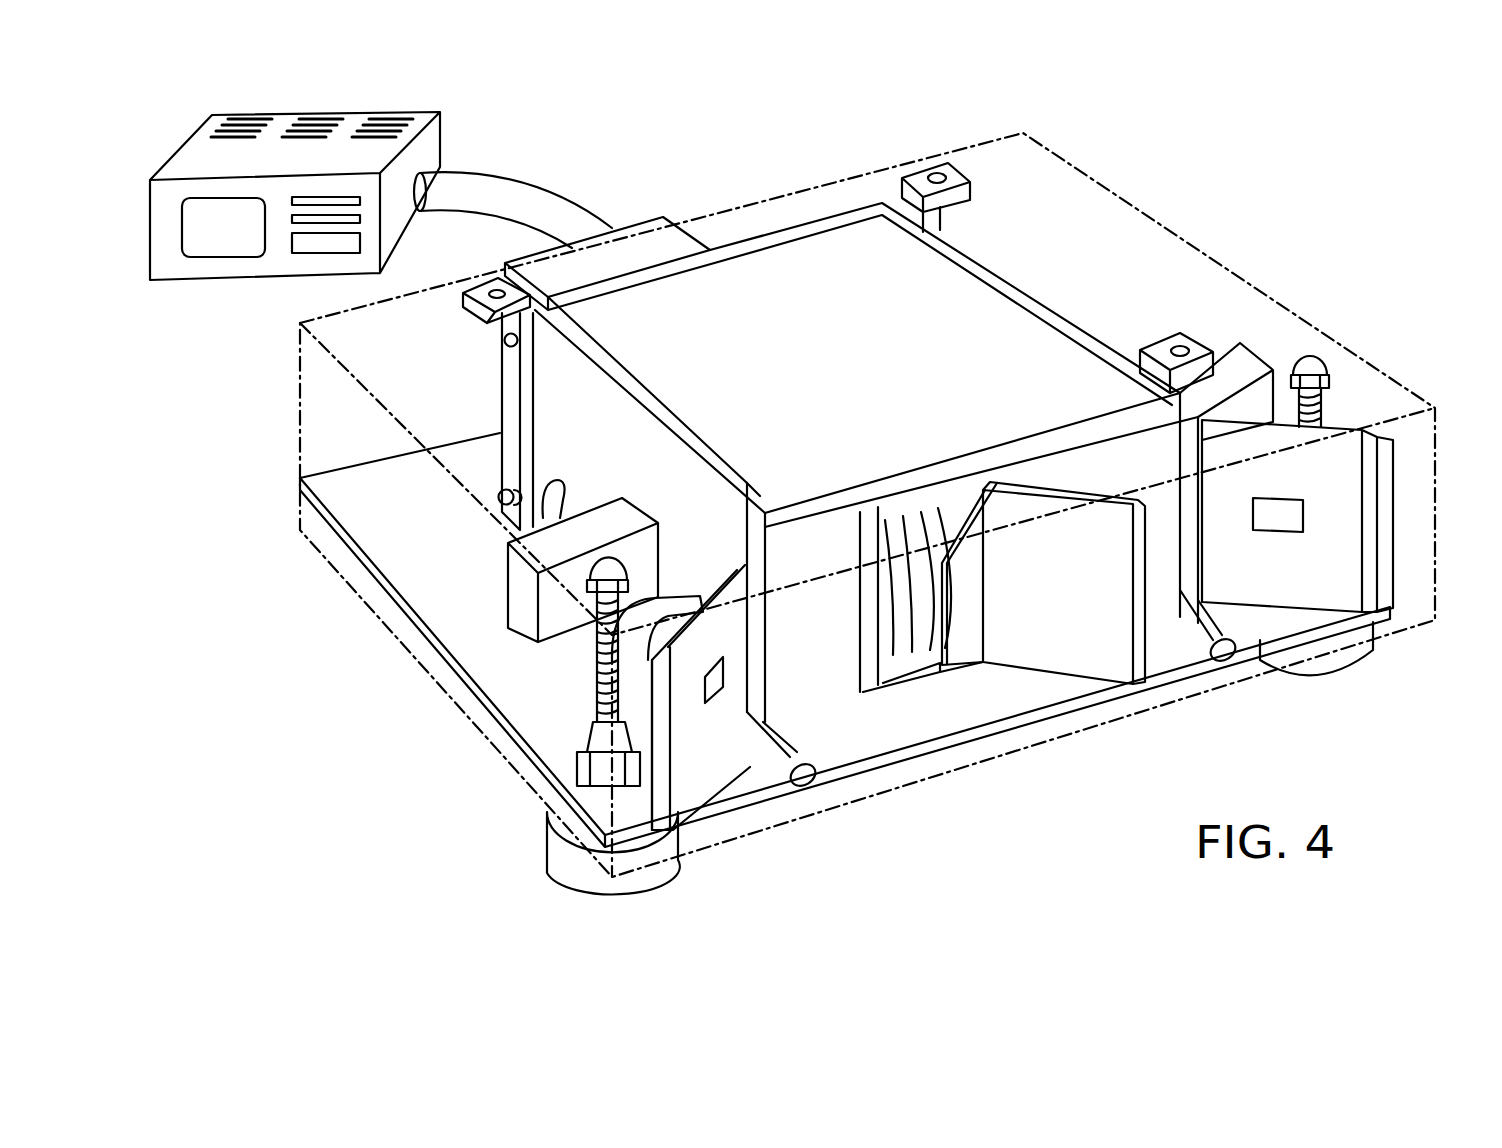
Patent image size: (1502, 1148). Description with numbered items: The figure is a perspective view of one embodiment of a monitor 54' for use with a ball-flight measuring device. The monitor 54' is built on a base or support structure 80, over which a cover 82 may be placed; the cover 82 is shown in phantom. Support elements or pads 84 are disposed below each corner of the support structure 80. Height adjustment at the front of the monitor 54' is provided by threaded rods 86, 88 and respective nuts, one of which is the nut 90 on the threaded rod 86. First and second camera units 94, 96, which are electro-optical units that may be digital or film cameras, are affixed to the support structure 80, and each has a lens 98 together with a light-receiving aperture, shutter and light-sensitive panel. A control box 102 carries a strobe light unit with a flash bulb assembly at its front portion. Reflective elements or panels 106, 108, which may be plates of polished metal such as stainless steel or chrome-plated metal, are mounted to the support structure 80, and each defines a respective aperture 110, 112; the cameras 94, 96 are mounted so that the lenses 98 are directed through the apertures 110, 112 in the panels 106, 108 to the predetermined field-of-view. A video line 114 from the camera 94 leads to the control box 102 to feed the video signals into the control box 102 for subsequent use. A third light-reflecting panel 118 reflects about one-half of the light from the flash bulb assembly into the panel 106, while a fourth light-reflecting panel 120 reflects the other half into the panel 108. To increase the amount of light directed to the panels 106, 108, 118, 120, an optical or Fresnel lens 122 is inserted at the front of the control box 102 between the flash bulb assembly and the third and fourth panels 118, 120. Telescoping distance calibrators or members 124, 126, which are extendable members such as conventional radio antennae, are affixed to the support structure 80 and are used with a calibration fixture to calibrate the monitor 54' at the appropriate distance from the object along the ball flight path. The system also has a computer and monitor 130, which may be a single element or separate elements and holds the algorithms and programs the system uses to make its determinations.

The monitor 54' is at (942, 535).
The support structure 80 is at (438, 597).
The cover 82 is at (300, 380).
The pads 84 is at (597, 887).
The threaded rod 86 is at (597, 688).
The threaded rod 88 is at (1307, 407).
The nut 90 is at (573, 767).
The first camera unit 94 is at (520, 610).
The second camera unit 96 is at (1273, 352).
The lens 98 is at (655, 815).
The control box 102 is at (841, 367).
The reflective panel 106 is at (697, 760).
The reflective panel 108 is at (1323, 590).
The aperture 110 is at (717, 690).
The aperture 112 is at (1303, 518).
The video line 114 is at (527, 517).
The third light-reflecting panel 118 is at (957, 680).
The fourth light-reflecting panel 120 is at (1067, 650).
The Fresnel lens 122 is at (890, 655).
The telescoping distance calibrator 124 is at (805, 787).
The telescoping distance calibrator 126 is at (1225, 657).
The computer and monitor 130 is at (443, 160).